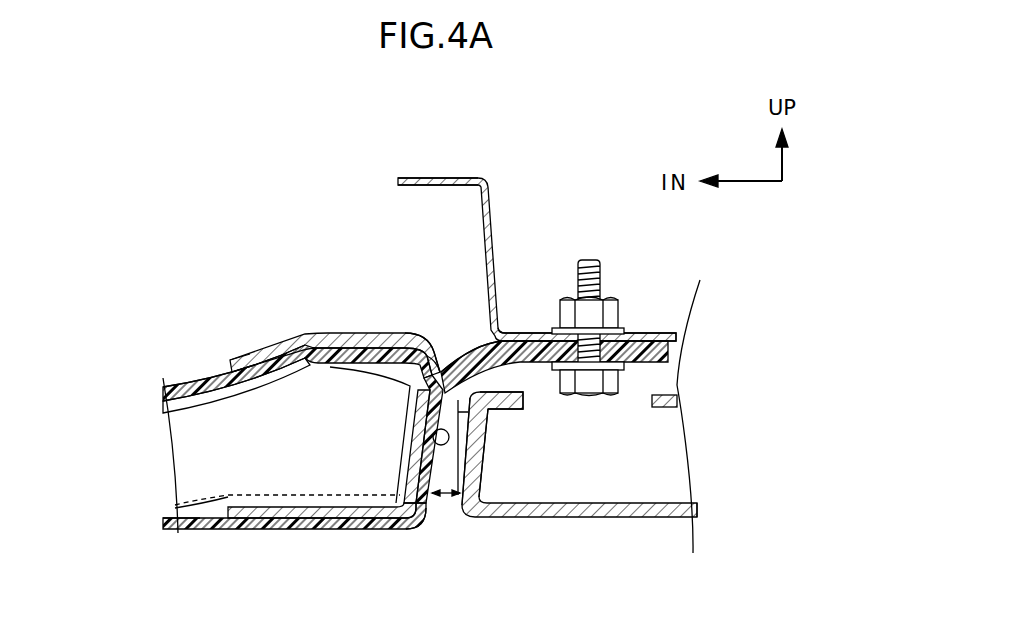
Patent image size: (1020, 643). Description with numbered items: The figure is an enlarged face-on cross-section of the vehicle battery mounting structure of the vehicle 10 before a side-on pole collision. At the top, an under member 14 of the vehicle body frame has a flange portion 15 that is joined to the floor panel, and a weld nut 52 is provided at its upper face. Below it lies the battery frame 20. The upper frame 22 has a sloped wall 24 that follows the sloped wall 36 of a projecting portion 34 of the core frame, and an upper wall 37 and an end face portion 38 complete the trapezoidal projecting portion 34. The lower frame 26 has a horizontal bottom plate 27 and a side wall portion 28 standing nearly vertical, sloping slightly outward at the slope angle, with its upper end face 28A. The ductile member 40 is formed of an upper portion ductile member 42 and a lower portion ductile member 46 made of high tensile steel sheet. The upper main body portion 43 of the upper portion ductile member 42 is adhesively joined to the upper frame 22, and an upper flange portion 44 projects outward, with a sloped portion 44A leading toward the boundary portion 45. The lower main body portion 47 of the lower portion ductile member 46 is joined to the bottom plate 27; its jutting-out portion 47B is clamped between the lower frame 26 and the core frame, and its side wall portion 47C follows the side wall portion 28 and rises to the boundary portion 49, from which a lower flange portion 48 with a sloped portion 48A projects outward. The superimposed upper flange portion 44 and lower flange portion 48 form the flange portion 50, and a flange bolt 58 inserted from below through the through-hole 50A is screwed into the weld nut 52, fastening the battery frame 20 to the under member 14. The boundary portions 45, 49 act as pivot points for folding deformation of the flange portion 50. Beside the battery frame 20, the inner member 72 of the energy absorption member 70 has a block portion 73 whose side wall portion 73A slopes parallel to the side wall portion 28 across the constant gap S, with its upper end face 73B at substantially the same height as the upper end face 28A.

The vehicle body 10 is at (475, 541).
The under member 14 is at (496, 215).
The flange portion 15 is at (397, 183).
The battery frame 20 is at (190, 553).
The upper frame 22 is at (182, 380).
The sloped wall 24 is at (238, 420).
The lower frame 26 is at (228, 535).
The bottom plate 27 is at (183, 540).
The side wall portion 28 is at (415, 438).
The upper end face 28A is at (430, 372).
The projecting portion 34 is at (182, 435).
The sloped wall 36 is at (226, 408).
The upper wall 37 is at (347, 365).
The end face portion 38 is at (414, 526).
The ductile member 40 is at (285, 335).
The upper portion ductile member 42 is at (270, 277).
The upper main body portion 43 is at (327, 333).
The upper flange portion 44 is at (678, 338).
The sloped portion 44A is at (496, 337).
The boundary portion 45 is at (436, 362).
The lower portion ductile member 46 is at (242, 500).
The lower main body portion 47 is at (329, 493).
The jutting-out portion 47B is at (278, 520).
The side wall portion 47C is at (408, 475).
The lower flange portion 48 is at (670, 357).
The sloped portion 48A is at (473, 355).
The boundary portion 49 is at (421, 335).
The flange portion 50 is at (612, 306).
The through-hole 50A is at (635, 336).
The weld nut 52 is at (617, 302).
The flange bolt 58 is at (592, 389).
The energy absorption member 70 is at (624, 519).
The inner member 72 is at (671, 491).
The block portion 73 is at (572, 519).
The side wall portion 73A is at (488, 455).
The upper end face 73B is at (523, 396).
The gap S is at (450, 497).